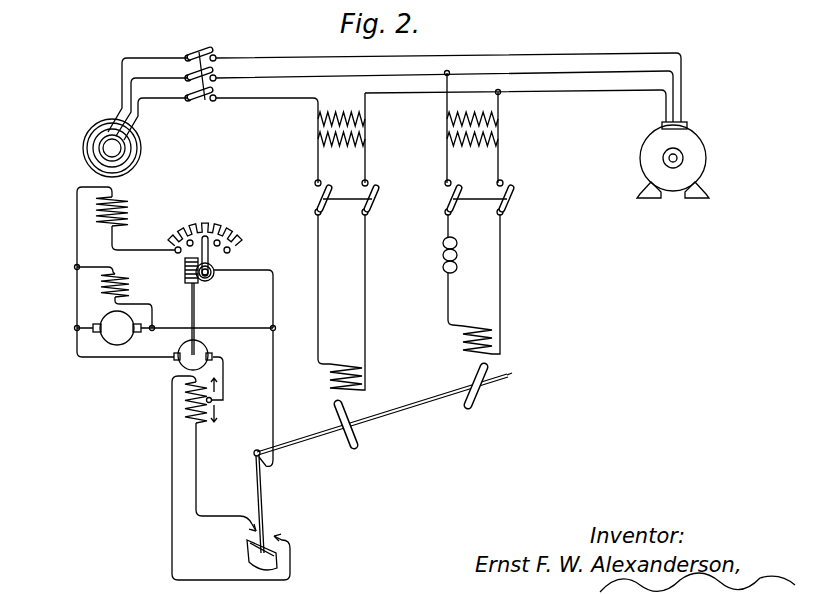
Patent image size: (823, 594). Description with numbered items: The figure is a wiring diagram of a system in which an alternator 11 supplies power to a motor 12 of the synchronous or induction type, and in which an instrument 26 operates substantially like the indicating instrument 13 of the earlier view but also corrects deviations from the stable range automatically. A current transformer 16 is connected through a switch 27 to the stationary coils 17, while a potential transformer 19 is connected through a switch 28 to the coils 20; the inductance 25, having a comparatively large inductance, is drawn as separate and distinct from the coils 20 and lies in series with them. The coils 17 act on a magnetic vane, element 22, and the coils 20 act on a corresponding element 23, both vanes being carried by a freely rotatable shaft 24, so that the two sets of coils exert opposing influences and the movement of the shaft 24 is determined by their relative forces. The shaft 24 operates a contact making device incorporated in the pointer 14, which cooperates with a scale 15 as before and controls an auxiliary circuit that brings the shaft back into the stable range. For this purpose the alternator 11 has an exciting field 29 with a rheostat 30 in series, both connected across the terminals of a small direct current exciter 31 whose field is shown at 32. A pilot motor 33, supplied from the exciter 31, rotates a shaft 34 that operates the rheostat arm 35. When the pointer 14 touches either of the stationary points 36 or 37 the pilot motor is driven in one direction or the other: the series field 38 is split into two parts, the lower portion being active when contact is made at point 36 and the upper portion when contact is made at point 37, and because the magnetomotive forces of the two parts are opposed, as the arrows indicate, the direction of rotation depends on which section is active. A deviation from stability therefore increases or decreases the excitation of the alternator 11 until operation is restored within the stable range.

The alternator 11 is at (96, 134).
The motor 12 is at (690, 136).
The instrument 13 is at (200, 50).
The pointer 14 is at (265, 492).
The scale 15 is at (243, 547).
The current transformer 16 is at (367, 129).
The stationary coils 17 is at (341, 361).
The potential transformer 19 is at (500, 127).
The coils 20 is at (474, 325).
The element 22 is at (337, 412).
The element 23 is at (475, 406).
The shaft 24 is at (506, 378).
The coil 25 is at (440, 256).
The instrument 26 is at (382, 414).
The switch 27 is at (378, 193).
The switch 28 is at (511, 189).
The exciting field 29 is at (133, 203).
The rheostat 30 is at (204, 222).
The direct current exciter 31 is at (105, 337).
The field of the exciter 32 is at (100, 285).
The pilot motor 33 is at (172, 372).
The shaft 34 is at (190, 292).
The rheostat arm 35 is at (212, 263).
The stationary point 36 is at (252, 526).
The stationary point 37 is at (281, 532).
The series field 38 is at (185, 397).